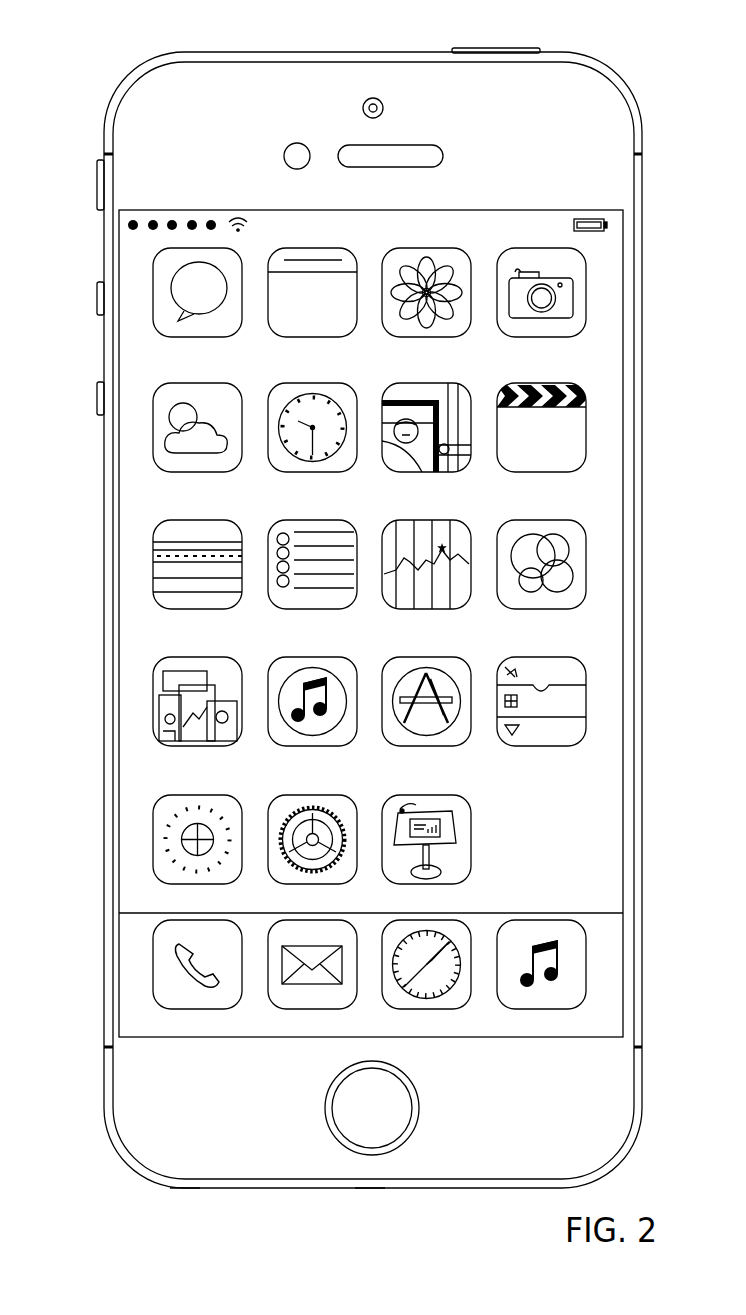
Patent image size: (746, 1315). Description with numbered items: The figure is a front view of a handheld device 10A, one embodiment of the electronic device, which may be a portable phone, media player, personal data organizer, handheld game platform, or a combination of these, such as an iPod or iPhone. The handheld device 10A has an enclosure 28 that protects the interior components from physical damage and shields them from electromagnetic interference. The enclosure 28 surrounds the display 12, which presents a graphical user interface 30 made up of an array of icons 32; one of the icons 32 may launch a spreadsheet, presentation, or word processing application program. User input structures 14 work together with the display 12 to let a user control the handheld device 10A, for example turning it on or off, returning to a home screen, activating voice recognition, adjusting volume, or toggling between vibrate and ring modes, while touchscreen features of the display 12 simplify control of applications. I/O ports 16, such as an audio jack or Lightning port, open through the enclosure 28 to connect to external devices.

The handheld device 10A is at (110, 33).
The display 12 is at (624, 545).
The user input structures 14 is at (507, 50).
The I/O ports 16 is at (185, 1189).
The enclosure 28 is at (643, 164).
The graphical user interface 30 is at (602, 359).
The icons 32 is at (449, 853).